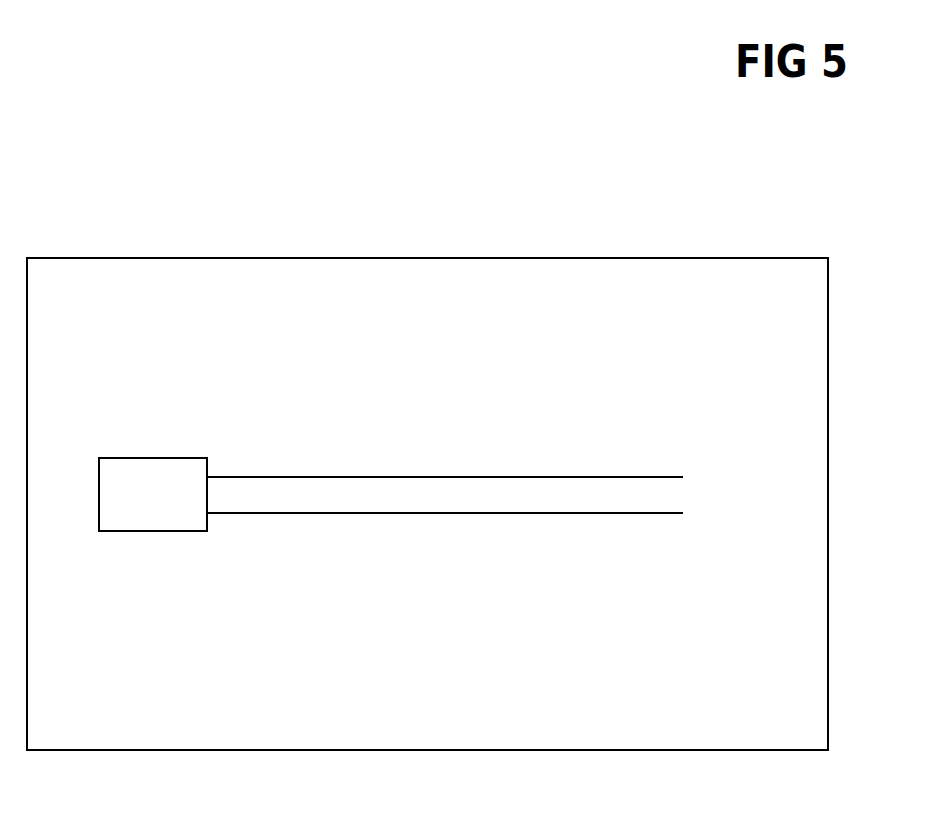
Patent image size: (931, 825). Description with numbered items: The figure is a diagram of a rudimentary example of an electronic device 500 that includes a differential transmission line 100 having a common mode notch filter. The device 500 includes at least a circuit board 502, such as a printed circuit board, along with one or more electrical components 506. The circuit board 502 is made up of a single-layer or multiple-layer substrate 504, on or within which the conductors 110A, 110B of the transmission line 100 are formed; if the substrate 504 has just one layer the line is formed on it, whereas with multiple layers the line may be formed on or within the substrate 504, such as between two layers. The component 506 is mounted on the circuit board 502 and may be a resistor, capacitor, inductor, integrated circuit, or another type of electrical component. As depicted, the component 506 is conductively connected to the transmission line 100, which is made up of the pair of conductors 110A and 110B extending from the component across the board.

The electronic device 500 is at (84, 146).
The circuit board 502 is at (243, 257).
The substrate 504 is at (803, 294).
The electrical component 506 is at (172, 521).
The transmission line 100 is at (477, 500).
The conductor 110A is at (425, 476).
The conductor 110B is at (419, 515).